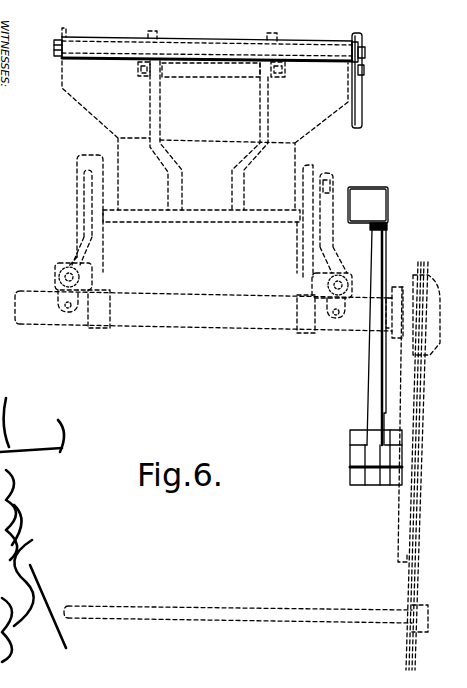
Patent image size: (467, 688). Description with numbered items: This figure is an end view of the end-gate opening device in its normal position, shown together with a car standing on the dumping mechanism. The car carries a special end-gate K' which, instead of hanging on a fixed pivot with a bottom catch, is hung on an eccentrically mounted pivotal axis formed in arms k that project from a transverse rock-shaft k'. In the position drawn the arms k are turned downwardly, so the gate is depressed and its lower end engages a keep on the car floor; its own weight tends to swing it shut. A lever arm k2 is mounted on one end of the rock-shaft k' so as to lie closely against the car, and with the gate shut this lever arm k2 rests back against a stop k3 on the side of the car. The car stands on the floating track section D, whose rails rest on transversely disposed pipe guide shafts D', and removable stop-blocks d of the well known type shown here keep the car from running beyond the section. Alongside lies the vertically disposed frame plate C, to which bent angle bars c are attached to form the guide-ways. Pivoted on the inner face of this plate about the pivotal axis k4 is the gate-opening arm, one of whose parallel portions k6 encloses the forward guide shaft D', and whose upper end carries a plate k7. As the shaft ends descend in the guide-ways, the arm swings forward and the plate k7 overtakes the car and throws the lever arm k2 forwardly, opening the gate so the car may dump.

The transverse rock-shaft k' is at (209, 37).
The arms k is at (214, 78).
The end-gate K' is at (205, 141).
The lever arm k2 is at (378, 80).
The stop k3 is at (387, 63).
The stops d is at (201, 216).
The track section D is at (203, 298).
The guide shaft D' is at (209, 312).
The plate k7 is at (368, 208).
The parallel portion of arm k6 is at (390, 337).
The pivotal axis k4 is at (359, 457).
The angle bar c is at (385, 419).
The frame plate C is at (255, 466).